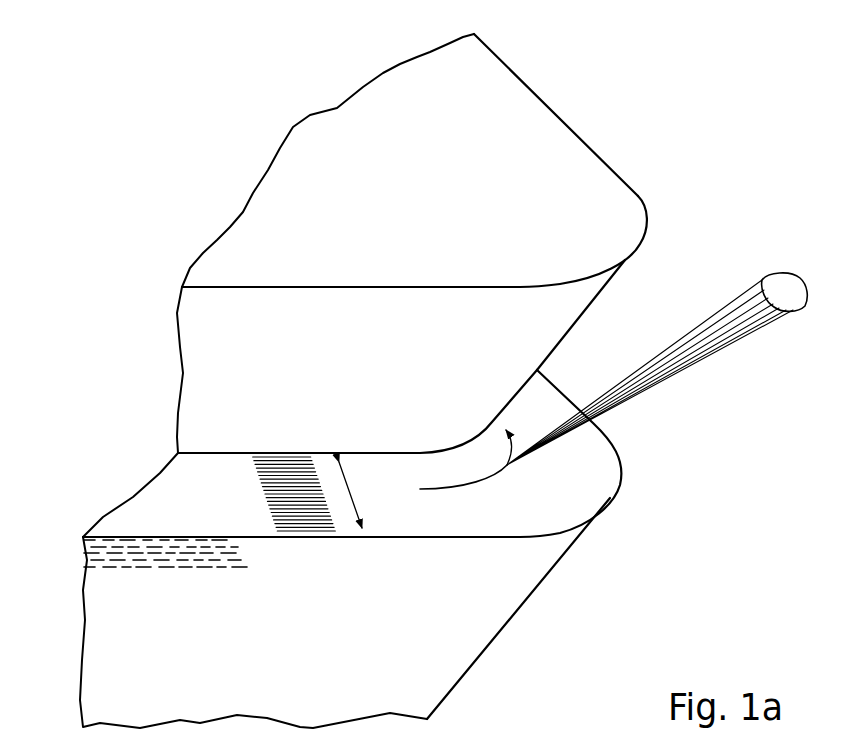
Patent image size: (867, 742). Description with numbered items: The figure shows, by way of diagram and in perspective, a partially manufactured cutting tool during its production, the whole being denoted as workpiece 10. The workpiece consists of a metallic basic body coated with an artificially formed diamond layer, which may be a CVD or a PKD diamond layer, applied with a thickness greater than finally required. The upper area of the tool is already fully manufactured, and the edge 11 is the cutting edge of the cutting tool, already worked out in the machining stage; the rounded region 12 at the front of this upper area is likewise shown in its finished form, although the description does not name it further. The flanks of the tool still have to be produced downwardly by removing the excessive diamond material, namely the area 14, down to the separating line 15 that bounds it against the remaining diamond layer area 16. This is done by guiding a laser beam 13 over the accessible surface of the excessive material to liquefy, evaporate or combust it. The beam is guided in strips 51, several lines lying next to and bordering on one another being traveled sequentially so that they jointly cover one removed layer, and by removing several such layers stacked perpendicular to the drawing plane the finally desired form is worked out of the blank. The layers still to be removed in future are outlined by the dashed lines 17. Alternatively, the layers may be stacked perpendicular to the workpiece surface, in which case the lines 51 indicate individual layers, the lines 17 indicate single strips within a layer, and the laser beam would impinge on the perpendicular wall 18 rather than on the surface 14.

The workpiece 10 is at (379, 375).
The cutting edge 11 is at (461, 196).
The rounded nose edge 12 is at (660, 212).
The laser beam 13 is at (727, 345).
The excessive diamond material 14 is at (517, 523).
The separating line 15 is at (197, 453).
The remaining diamond layer area 16 is at (264, 233).
The dashed lines 17 is at (107, 567).
The perpendicular wall 18 is at (115, 613).
The strips 51 is at (303, 523).